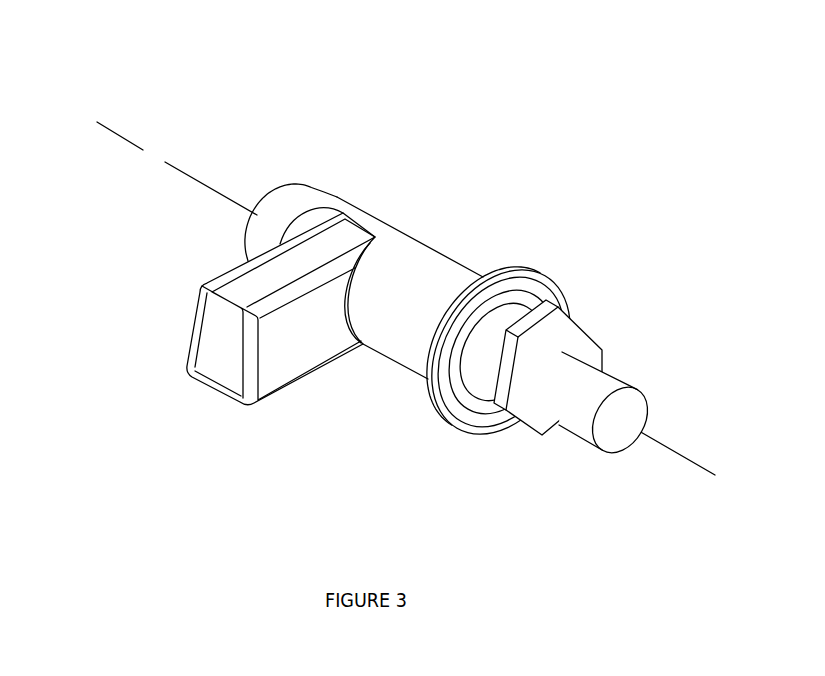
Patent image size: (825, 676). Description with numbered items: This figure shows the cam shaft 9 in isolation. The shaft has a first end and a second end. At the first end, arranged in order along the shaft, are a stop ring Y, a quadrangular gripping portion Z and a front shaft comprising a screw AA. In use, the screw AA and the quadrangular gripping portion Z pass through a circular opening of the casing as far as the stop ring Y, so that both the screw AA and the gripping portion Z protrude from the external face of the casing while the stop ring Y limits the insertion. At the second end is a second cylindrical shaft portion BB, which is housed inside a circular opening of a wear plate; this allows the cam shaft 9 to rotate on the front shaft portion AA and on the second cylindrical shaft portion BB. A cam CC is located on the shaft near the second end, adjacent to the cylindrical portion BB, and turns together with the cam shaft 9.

The cam shaft 9 is at (449, 231).
The second cylindrical shaft portion BB is at (322, 174).
The stop ring Y is at (550, 267).
The quadrangular gripping portion Z is at (596, 323).
The screw AA is at (636, 371).
The cam CC is at (202, 403).